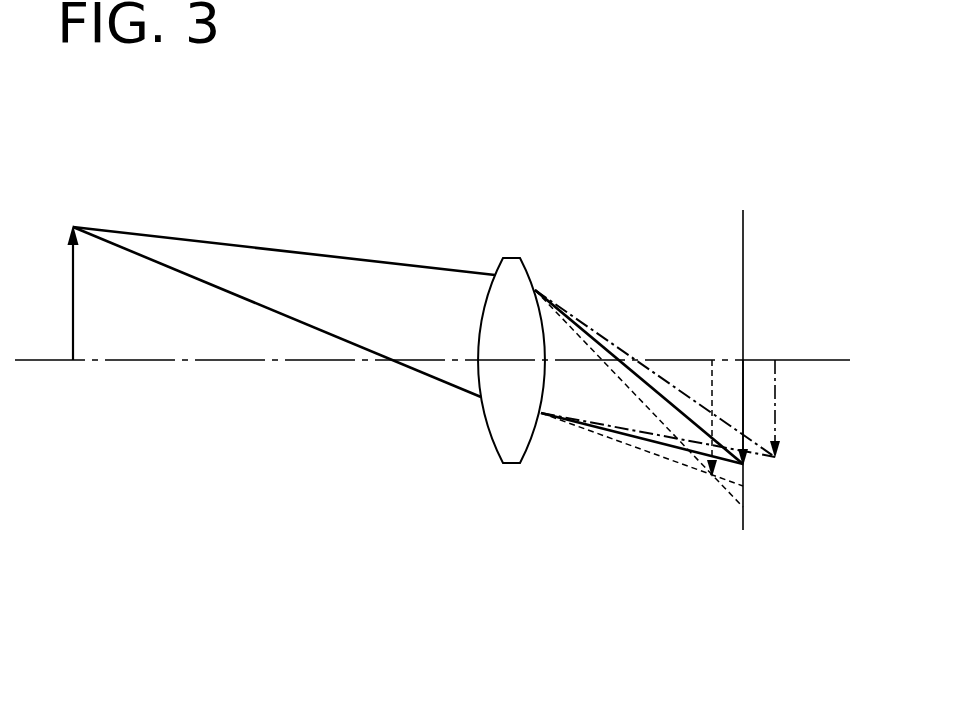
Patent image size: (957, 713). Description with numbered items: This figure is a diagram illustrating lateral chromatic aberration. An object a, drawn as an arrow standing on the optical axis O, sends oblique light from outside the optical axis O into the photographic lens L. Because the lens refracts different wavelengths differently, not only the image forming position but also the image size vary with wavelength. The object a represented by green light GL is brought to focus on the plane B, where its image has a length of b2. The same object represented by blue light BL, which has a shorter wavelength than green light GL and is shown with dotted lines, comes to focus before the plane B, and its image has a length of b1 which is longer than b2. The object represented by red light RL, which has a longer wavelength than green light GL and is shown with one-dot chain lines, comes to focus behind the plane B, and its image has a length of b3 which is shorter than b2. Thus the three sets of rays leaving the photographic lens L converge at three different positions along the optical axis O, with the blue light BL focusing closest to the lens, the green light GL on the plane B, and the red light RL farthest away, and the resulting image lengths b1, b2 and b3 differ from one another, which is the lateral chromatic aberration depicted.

The object a is at (70, 291).
The optical axis O is at (178, 362).
The photographic lens L is at (508, 290).
The blue light BL is at (577, 318).
The green light GL is at (600, 340).
The red light RL is at (627, 347).
The plane B is at (743, 240).
The length of blue light image b1 is at (718, 385).
The length of green light image b2 is at (745, 387).
The length of red light image b3 is at (775, 387).